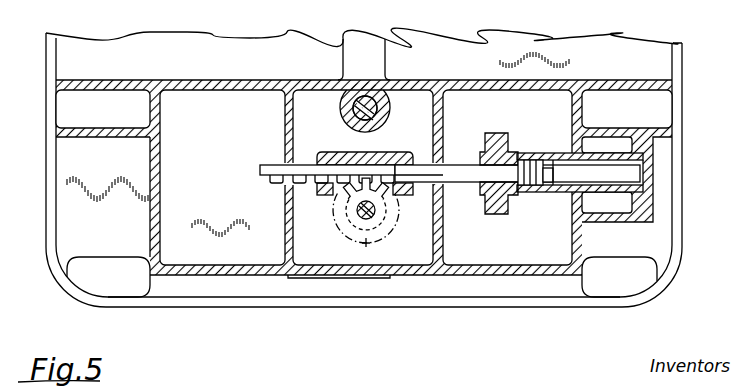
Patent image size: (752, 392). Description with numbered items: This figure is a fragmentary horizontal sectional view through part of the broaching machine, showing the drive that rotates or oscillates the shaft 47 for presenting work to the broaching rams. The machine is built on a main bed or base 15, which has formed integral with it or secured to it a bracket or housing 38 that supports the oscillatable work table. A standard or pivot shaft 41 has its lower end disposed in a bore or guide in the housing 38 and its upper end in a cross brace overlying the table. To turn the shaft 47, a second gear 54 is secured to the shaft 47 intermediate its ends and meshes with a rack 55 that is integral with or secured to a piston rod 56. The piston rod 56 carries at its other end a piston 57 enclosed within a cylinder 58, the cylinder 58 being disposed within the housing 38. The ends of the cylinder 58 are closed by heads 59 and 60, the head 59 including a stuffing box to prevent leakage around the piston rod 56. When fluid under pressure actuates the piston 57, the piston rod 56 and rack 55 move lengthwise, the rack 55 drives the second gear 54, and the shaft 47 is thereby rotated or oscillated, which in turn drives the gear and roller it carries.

The main bed or base 15 is at (683, 100).
The bracket or housing 38 is at (348, 276).
The standard or pivot shaft 41 is at (347, 128).
The shaft 47 is at (360, 218).
The second gear 54 is at (391, 230).
The rack 55 is at (271, 183).
The piston rod 56 is at (452, 170).
The piston 57 is at (527, 162).
The cylinder 58 is at (550, 194).
The head 59 is at (508, 210).
The head 60 is at (655, 168).